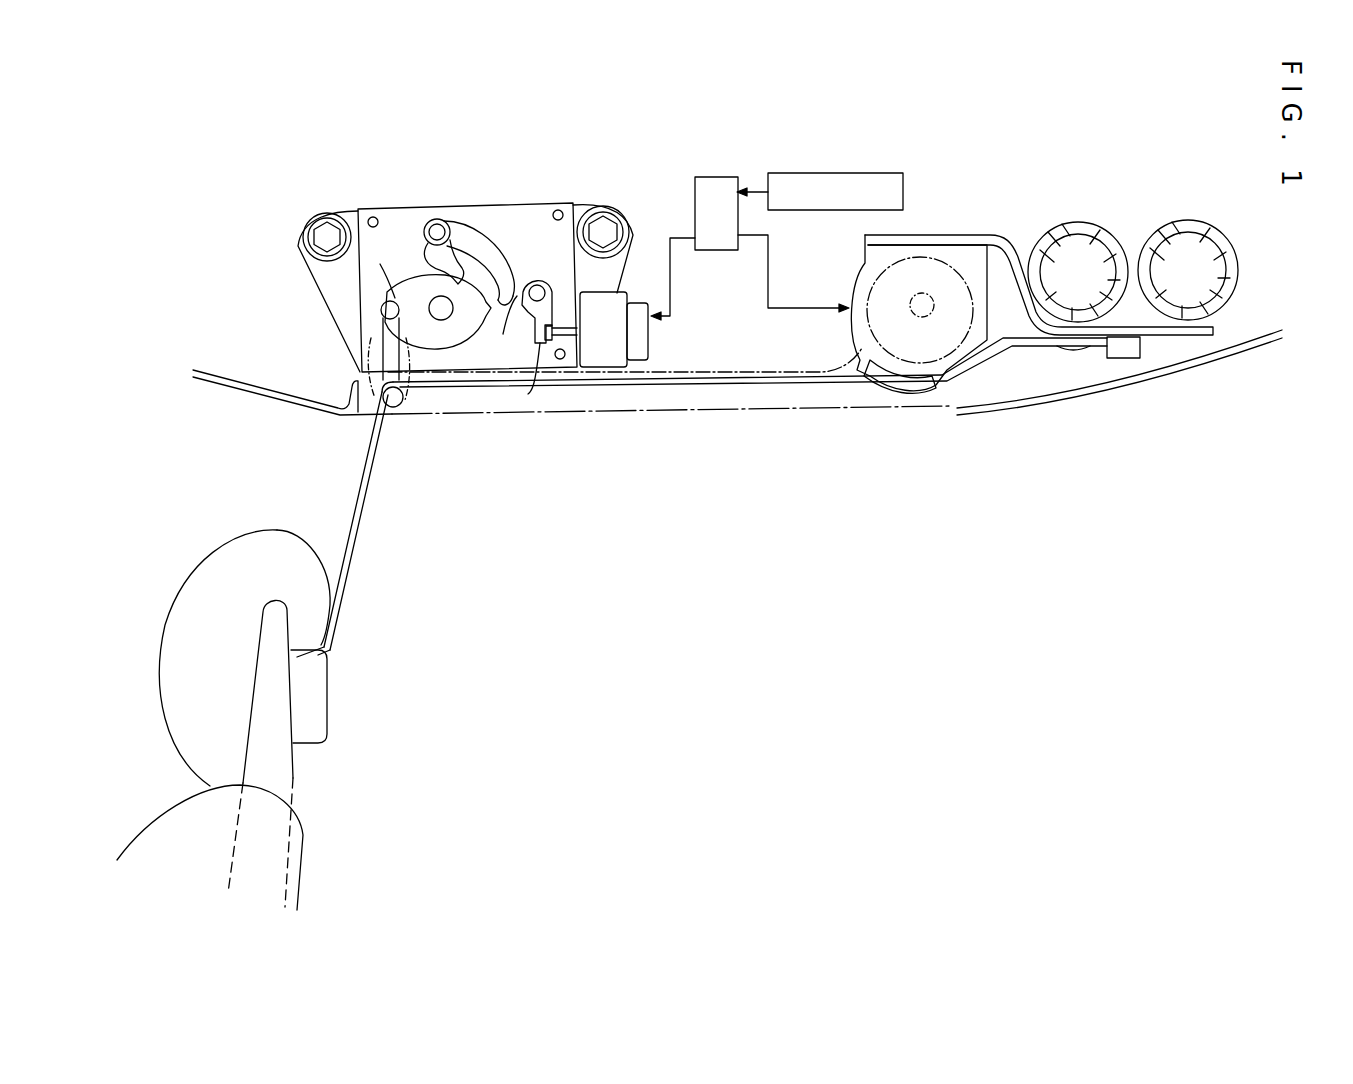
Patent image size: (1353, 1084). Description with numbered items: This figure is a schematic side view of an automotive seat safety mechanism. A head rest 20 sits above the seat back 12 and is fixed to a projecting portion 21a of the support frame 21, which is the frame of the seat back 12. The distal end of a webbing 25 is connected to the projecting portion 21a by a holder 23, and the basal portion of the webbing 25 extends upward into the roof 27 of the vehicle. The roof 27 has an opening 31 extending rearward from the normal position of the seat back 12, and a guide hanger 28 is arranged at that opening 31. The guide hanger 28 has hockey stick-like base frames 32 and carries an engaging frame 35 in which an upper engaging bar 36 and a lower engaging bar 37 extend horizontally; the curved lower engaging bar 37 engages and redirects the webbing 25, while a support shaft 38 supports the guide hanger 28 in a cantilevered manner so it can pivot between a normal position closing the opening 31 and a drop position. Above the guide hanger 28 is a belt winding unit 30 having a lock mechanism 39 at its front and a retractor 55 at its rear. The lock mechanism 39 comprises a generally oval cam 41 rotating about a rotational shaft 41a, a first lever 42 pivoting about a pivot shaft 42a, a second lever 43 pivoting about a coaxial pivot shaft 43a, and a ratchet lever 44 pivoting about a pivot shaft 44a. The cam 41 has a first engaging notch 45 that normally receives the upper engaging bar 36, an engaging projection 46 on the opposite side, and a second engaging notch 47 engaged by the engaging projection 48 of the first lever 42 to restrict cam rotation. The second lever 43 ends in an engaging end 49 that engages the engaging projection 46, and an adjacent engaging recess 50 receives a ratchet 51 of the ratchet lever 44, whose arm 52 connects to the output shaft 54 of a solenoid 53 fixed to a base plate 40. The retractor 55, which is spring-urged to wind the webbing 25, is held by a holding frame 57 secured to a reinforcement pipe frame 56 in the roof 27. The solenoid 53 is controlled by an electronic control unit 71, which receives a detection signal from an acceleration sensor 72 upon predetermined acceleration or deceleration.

The seat back 12 is at (300, 861).
The head rest 20 is at (207, 582).
The support frame 21 is at (247, 843).
The projecting portion 21a is at (288, 778).
The holder 23 is at (317, 707).
The webbing 25 is at (360, 508).
The roof 27 is at (1022, 410).
The guide hanger 28 is at (780, 410).
The belt winding unit 30 is at (928, 226).
The opening 31 is at (968, 380).
The base frames 32 is at (730, 372).
The engaging frame 35 is at (360, 340).
The upper engaging bar 36 is at (381, 297).
The lower engaging bar 37 is at (393, 410).
The support shaft 38 is at (930, 302).
The lock mechanism 39 is at (446, 205).
The base plate 40 is at (546, 210).
The cam 41 is at (378, 309).
The rotational shaft 41a is at (442, 314).
The first lever 42 is at (456, 232).
The pivot shaft 42a is at (430, 222).
The second lever 43 is at (500, 256).
The pivot shaft 43a is at (402, 210).
The ratchet lever 44 is at (524, 324).
The pivot shaft 44a is at (547, 288).
The first engaging notch 45 is at (372, 294).
The engaging projection 46 is at (438, 321).
The second engaging notch 47 is at (455, 282).
The engaging projection 48 is at (430, 252).
The engaging end 49 is at (492, 296).
The engaging recess 50 is at (507, 286).
The ratchet 51 is at (540, 284).
The arm 52 is at (549, 379).
The solenoid 53 is at (640, 346).
The output shaft 54 is at (563, 321).
The retractor 55 is at (866, 266).
The reinforcement pipe frame 56 is at (1162, 236).
The holding frame 57 is at (972, 235).
The electronic control unit (ECU) 71 is at (694, 196).
The acceleration (G) sensor 72 is at (904, 190).